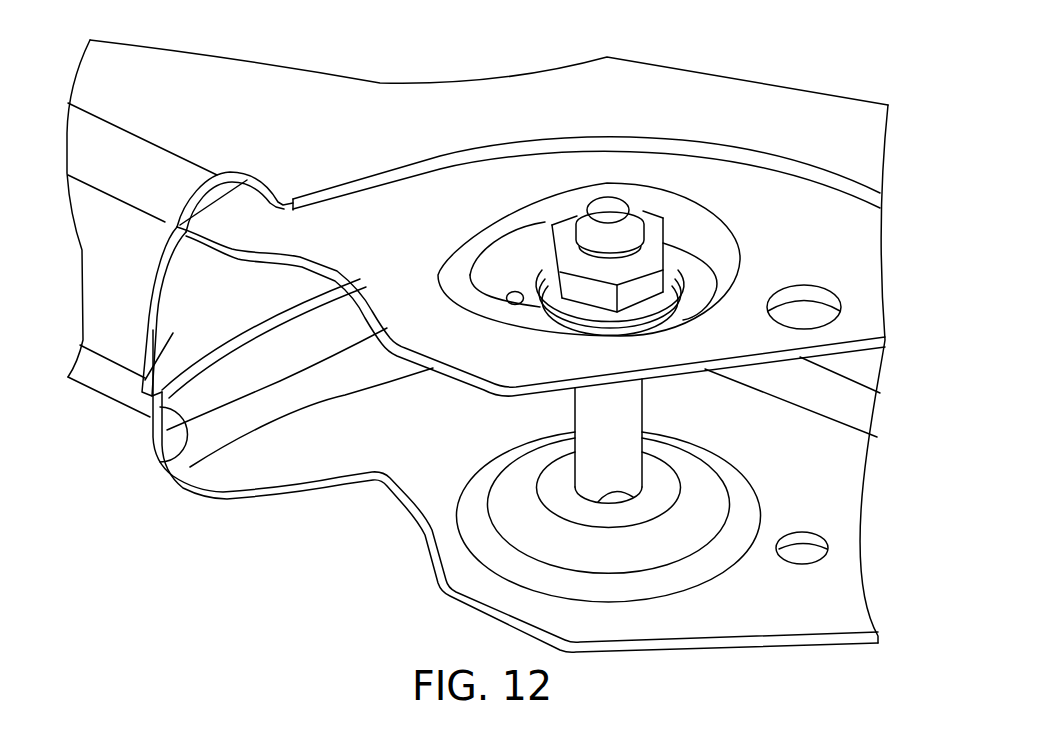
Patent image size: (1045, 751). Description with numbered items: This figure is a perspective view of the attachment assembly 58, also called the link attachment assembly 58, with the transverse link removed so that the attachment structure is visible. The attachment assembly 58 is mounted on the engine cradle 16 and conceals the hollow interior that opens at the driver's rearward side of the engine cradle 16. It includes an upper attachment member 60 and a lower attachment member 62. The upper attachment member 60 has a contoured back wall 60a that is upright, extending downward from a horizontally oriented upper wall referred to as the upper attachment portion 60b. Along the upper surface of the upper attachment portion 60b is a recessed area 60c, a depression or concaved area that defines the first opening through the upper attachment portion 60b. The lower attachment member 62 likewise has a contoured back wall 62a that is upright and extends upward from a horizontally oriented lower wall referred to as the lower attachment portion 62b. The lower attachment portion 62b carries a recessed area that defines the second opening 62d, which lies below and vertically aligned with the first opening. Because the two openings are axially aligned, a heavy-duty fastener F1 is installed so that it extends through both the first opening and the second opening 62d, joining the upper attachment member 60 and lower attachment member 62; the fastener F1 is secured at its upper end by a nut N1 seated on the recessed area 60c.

The engine cradle 16 is at (203, 90).
The attachment assembly 58 is at (143, 318).
The upper attachment member 60 is at (857, 351).
The contoured back wall 60a is at (143, 388).
The upper attachment portion 60b is at (850, 270).
The recessed area 60c is at (527, 284).
The nut N1 is at (653, 247).
The fastener F1 is at (610, 410).
The lower attachment member 62 is at (823, 628).
The contoured back wall 62a is at (173, 453).
The lower attachment portion 62b is at (825, 479).
The second opening 62d is at (610, 495).